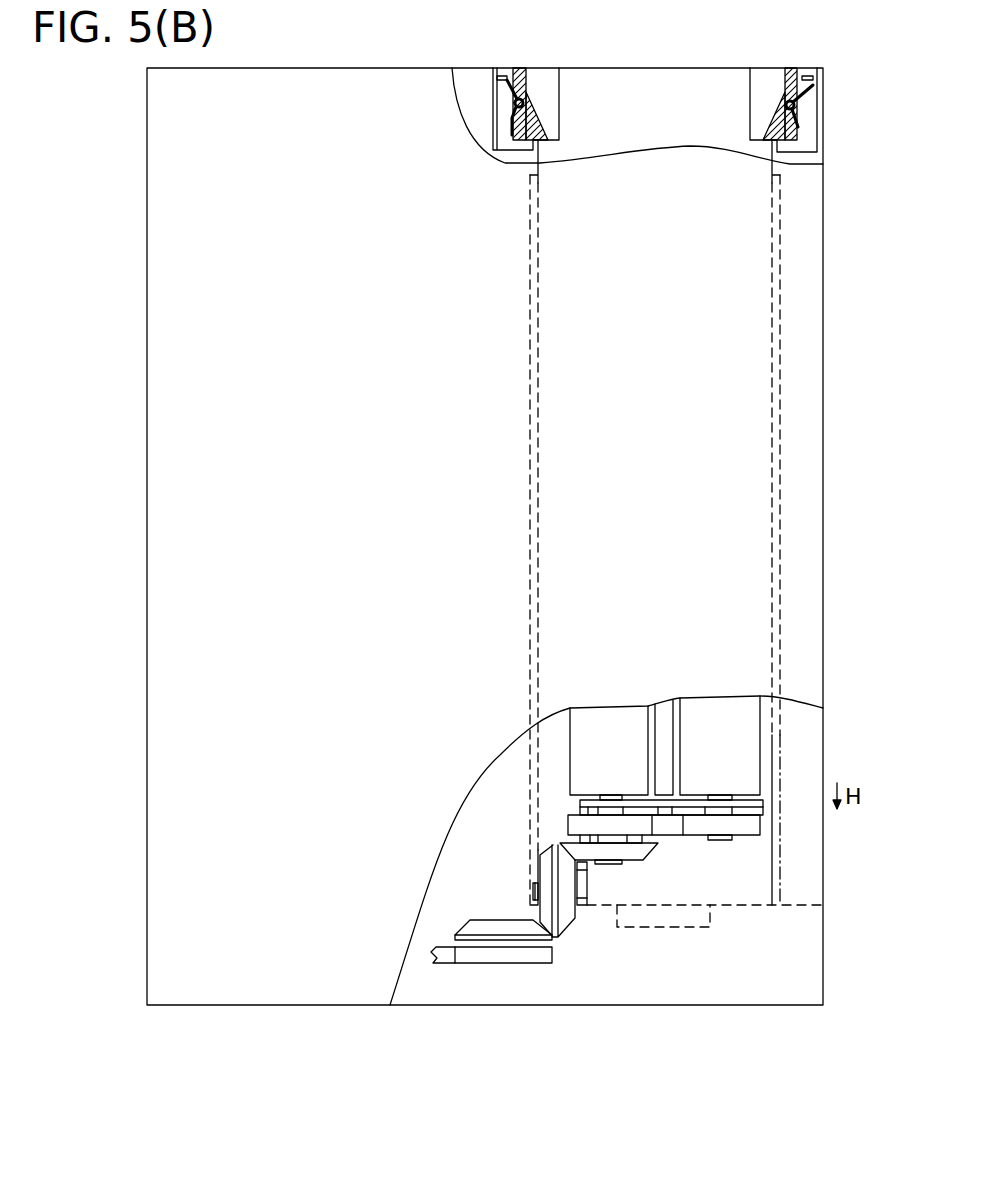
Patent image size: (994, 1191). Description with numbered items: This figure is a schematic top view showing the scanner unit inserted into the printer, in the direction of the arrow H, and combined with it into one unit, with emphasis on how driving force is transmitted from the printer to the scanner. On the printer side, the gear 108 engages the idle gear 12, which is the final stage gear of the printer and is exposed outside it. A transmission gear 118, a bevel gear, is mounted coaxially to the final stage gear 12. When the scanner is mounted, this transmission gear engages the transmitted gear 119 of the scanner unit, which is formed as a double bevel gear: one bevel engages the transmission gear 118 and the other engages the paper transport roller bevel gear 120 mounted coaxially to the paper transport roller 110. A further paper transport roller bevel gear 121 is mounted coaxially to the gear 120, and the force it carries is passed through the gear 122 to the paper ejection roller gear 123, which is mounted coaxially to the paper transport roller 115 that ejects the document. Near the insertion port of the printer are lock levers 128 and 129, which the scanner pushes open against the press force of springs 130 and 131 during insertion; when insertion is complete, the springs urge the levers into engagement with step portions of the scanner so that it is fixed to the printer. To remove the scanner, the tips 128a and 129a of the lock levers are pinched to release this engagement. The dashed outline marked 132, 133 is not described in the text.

The idle gear 12 is at (480, 960).
The gear 108 is at (445, 962).
The paper transport roller 110 is at (615, 717).
The paper transport roller 115 is at (712, 703).
The transmission gear 118 is at (530, 940).
The transmitted gear 119 is at (570, 922).
The paper transport roller bevel gear 120 is at (638, 864).
The paper transport roller bevel gear 121 is at (638, 830).
The gear 122 is at (672, 832).
The paper ejection roller gear 123 is at (740, 828).
The lock lever 128 is at (530, 105).
The tip of lock lever 128a is at (519, 72).
The lock lever 129 is at (776, 115).
The tip of lock lever 129a is at (789, 68).
The spring 130 is at (516, 88).
The spring 131 is at (812, 88).
The sensor 132 is at (705, 944).
The sensor 133 is at (700, 927).